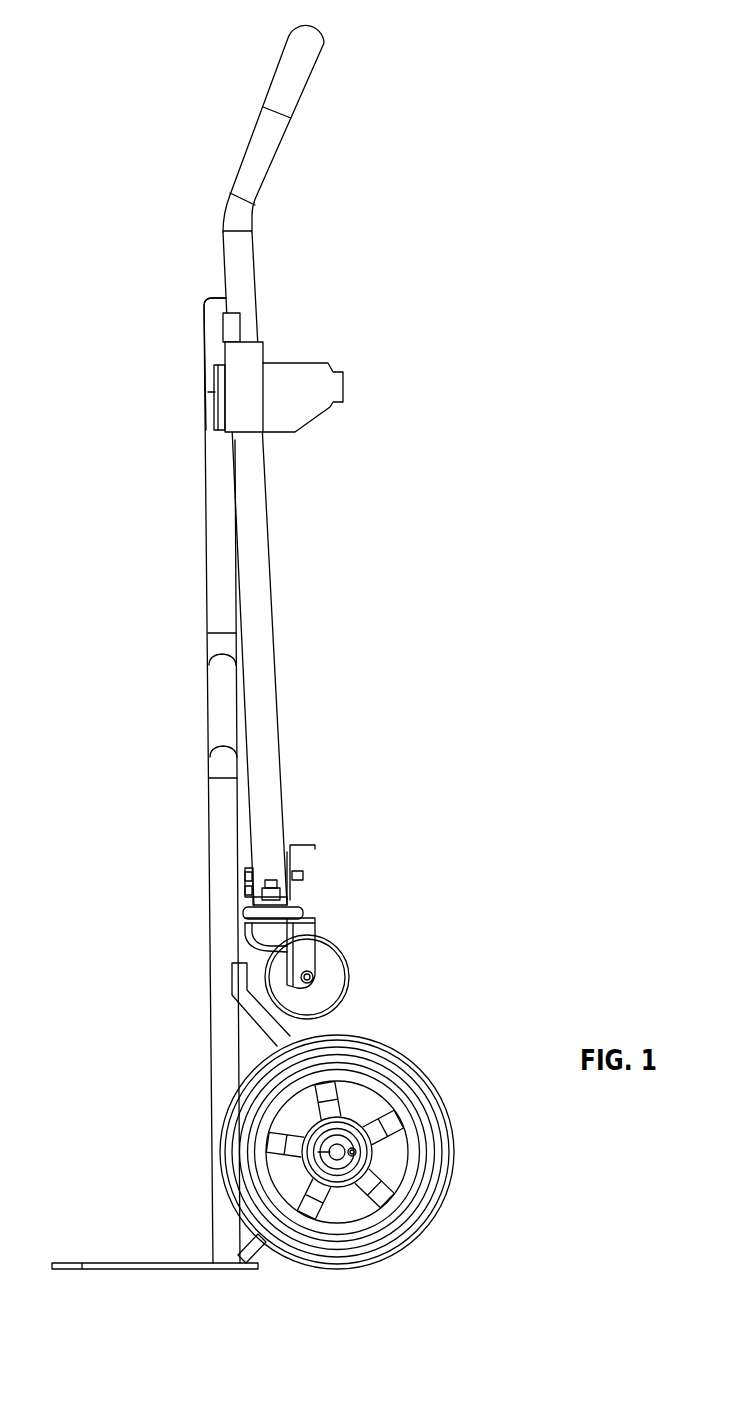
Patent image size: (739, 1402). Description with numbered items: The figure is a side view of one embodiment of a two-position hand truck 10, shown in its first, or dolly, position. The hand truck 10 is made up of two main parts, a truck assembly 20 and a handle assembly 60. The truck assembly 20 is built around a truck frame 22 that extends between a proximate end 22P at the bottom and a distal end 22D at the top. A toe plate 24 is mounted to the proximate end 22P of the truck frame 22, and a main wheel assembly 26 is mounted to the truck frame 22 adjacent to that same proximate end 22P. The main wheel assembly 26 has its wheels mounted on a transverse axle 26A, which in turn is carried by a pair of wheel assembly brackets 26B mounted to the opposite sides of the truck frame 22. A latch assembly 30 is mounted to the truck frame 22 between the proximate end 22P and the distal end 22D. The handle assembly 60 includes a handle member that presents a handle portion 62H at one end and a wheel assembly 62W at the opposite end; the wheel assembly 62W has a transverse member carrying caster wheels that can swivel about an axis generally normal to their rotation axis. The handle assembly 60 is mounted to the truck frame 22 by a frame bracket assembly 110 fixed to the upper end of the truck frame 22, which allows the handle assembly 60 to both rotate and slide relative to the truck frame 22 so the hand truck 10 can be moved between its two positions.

The two-position hand truck 10 is at (392, 68).
The truck assembly 20 is at (155, 853).
The truck frame 22 is at (204, 617).
The distal end 22D is at (194, 298).
The proximate end 22P is at (194, 1240).
The toe plate 24 is at (102, 1262).
The main wheel assembly 26 is at (440, 1074).
The transverse axle 26A is at (339, 1149).
The wheel assembly brackets 26B is at (280, 1042).
The latch assembly 30 is at (315, 843).
The handle assembly 60 is at (294, 603).
The handle portion 62H is at (299, 101).
The wheel assembly 62W is at (340, 907).
The frame bracket assembly 110 is at (318, 352).